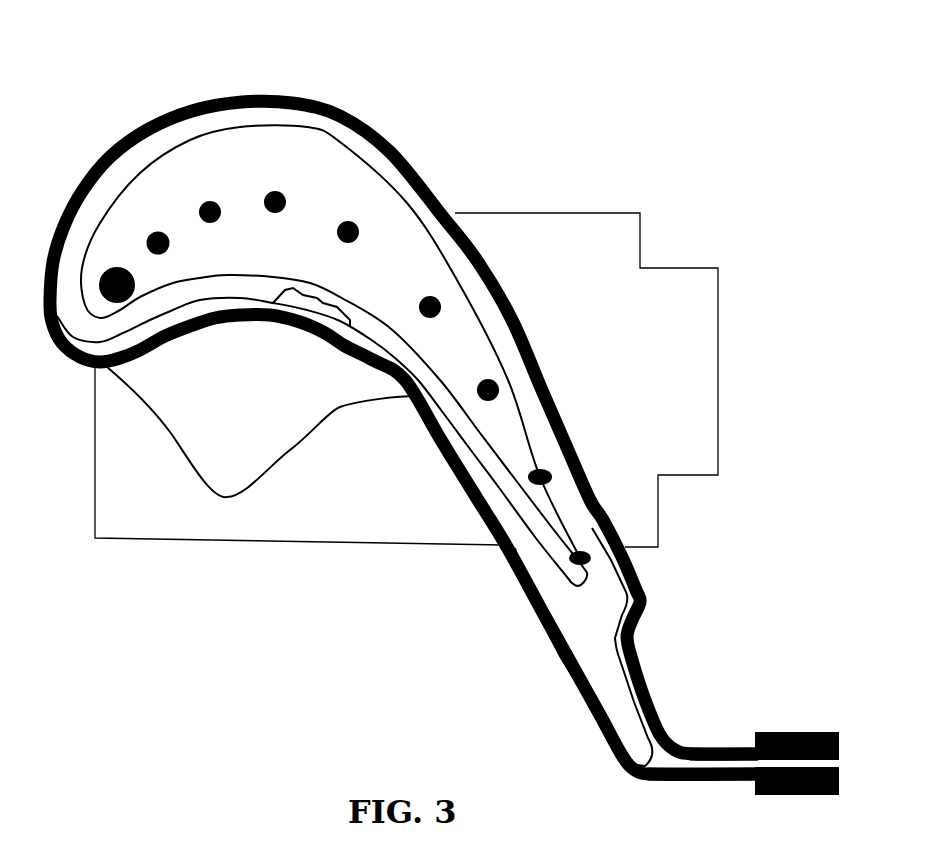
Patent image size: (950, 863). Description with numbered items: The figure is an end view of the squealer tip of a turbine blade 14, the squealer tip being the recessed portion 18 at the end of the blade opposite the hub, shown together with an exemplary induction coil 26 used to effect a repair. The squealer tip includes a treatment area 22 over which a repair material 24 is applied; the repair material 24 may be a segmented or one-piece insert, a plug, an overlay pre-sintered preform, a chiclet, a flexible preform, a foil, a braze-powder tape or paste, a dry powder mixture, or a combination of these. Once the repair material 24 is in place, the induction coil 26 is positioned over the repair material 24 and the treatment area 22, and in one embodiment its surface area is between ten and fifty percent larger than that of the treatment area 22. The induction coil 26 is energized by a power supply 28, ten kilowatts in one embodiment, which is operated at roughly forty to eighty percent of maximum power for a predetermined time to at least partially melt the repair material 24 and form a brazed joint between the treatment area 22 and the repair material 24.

The recessed portion 18 is at (278, 90).
The blade 14 is at (157, 317).
The treatment area 22 is at (263, 320).
The repair material 24 is at (313, 335).
The induction coil 26 is at (715, 748).
The power supply 28 is at (805, 732).